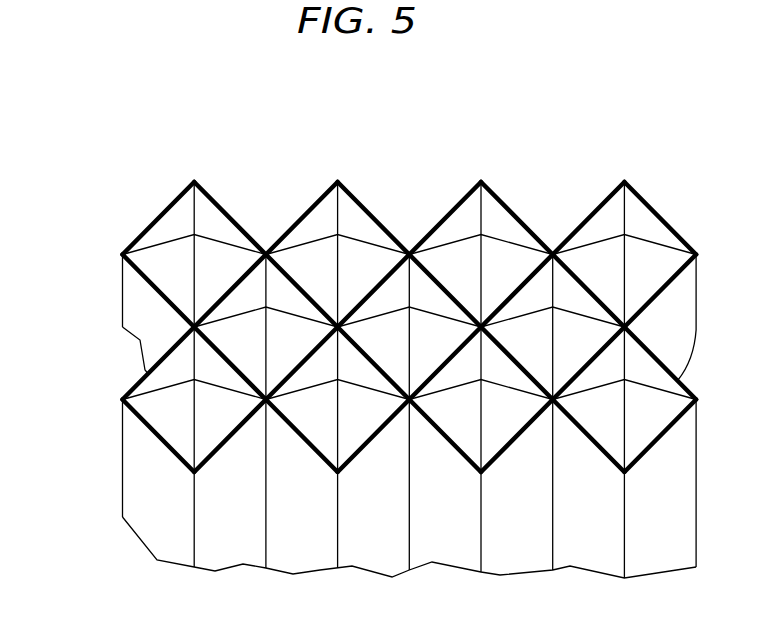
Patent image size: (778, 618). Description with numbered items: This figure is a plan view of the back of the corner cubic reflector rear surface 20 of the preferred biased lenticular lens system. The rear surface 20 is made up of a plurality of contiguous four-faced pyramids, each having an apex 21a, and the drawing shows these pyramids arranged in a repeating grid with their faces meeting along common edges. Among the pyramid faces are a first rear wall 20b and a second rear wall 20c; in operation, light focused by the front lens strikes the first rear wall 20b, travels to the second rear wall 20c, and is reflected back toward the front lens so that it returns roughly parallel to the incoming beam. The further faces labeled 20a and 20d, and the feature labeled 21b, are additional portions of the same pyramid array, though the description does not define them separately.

The corner cubic reflector rear surface 20 is at (422, 128).
The first facet 20a is at (170, 288).
The first rear wall 20b is at (222, 257).
The second rear wall 20c is at (298, 263).
The fourth facet 20d is at (370, 263).
The apex 21a is at (193, 233).
The second fold line 21b is at (265, 253).